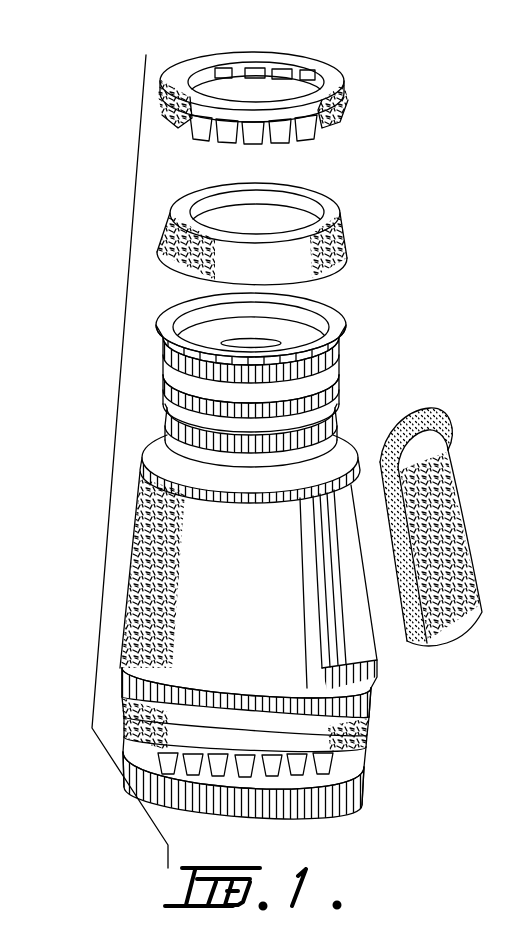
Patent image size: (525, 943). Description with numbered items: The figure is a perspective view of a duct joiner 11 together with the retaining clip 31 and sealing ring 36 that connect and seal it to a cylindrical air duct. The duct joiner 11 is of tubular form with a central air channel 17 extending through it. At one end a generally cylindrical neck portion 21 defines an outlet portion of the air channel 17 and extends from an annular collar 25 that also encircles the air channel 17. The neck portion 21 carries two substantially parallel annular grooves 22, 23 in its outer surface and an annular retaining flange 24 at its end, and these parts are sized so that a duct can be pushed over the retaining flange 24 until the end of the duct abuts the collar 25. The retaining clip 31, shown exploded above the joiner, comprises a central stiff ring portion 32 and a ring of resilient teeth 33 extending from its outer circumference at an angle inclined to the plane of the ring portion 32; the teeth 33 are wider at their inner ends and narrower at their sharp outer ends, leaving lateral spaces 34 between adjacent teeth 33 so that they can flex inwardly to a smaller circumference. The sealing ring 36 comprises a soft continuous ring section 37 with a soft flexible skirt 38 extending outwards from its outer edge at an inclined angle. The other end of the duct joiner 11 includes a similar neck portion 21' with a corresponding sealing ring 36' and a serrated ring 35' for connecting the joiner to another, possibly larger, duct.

The duct joiner 11 is at (128, 540).
The central air channel 17 is at (285, 333).
The neck portion 21 is at (287, 370).
The neck portion 21' is at (204, 702).
The annular groove 22 is at (168, 376).
The annular groove 23 is at (168, 418).
The annular retaining flange 24 is at (345, 345).
The annular collar 25 is at (147, 455).
The retaining clip 31 is at (332, 60).
The central stiff ring portion 32 is at (342, 90).
The resilient teeth 33 is at (268, 147).
The lateral spaces 34 is at (274, 150).
The lower serrated ring 35' is at (294, 765).
The sealing ring 36 is at (286, 246).
The sealing ring 36' is at (294, 717).
The continuous ring section 37 is at (330, 190).
The flexible skirt 38 is at (300, 275).